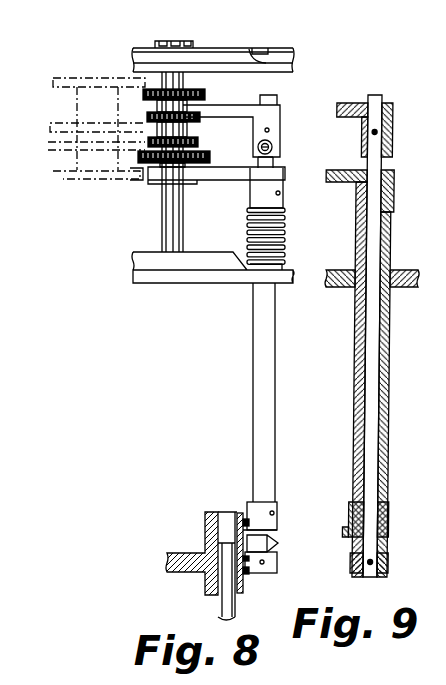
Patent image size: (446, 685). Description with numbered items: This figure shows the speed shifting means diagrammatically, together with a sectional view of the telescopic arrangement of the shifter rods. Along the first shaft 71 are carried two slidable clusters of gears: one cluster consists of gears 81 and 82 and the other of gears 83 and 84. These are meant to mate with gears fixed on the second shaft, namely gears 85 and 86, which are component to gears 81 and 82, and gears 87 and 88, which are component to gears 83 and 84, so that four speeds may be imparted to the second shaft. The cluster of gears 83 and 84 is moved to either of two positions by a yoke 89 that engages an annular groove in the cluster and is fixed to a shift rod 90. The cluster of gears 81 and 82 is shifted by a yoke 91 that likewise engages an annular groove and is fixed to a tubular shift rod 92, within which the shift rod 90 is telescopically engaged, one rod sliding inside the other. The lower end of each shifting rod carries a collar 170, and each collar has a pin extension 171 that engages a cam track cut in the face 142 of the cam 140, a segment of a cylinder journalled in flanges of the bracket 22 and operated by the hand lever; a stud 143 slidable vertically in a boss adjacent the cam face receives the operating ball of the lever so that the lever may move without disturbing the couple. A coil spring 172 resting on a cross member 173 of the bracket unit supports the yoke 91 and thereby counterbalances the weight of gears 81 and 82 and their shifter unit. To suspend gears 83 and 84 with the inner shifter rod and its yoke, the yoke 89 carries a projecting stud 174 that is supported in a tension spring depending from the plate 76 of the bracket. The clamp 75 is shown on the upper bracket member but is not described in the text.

In FIG. 8, the bracket 22 is at (222, 55).
In FIG. 8, the first shaft 71 is at (162, 215).
In FIG. 8, the clamp 75 is at (193, 40).
In FIG. 8, the plate 76 is at (262, 47).
In FIG. 8, the gear 81 is at (212, 157).
In FIG. 8, the gear 82 is at (200, 143).
In FIG. 8, the gear 83 is at (207, 97).
In FIG. 8, the gear 84 is at (202, 117).
In FIG. 8, the gear 85 is at (61, 175).
In FIG. 8, the gear 86 is at (50, 141).
In FIG. 8, the gear 87 is at (64, 83).
In FIG. 8, the gear 88 is at (50, 125).
In FIG. 8, the yoke 89 is at (337, 110).
In FIG. 9, the yoke 89 is at (337, 110).
In FIG. 8, the shift rod 90 is at (373, 162).
In FIG. 9, the shift rod 90 is at (360, 161).
In FIG. 8, the yoke 91 is at (230, 177).
In FIG. 9, the yoke 91 is at (343, 179).
In FIG. 8, the tubular shift rod 92 is at (263, 333).
In FIG. 8, the cam 140 is at (187, 570).
In FIG. 8, the forward face of the cam 142 is at (247, 576).
In FIG. 8, the stud 143 is at (217, 597).
In FIG. 8, the collar 170 is at (350, 512).
In FIG. 9, the collar 170 is at (355, 560).
In FIG. 8, the pin extension 171 is at (277, 543).
In FIG. 8, the coil spring 172 is at (287, 236).
In FIG. 8, the cross member 173 is at (207, 282).
In FIG. 8, the stud 174 is at (277, 145).